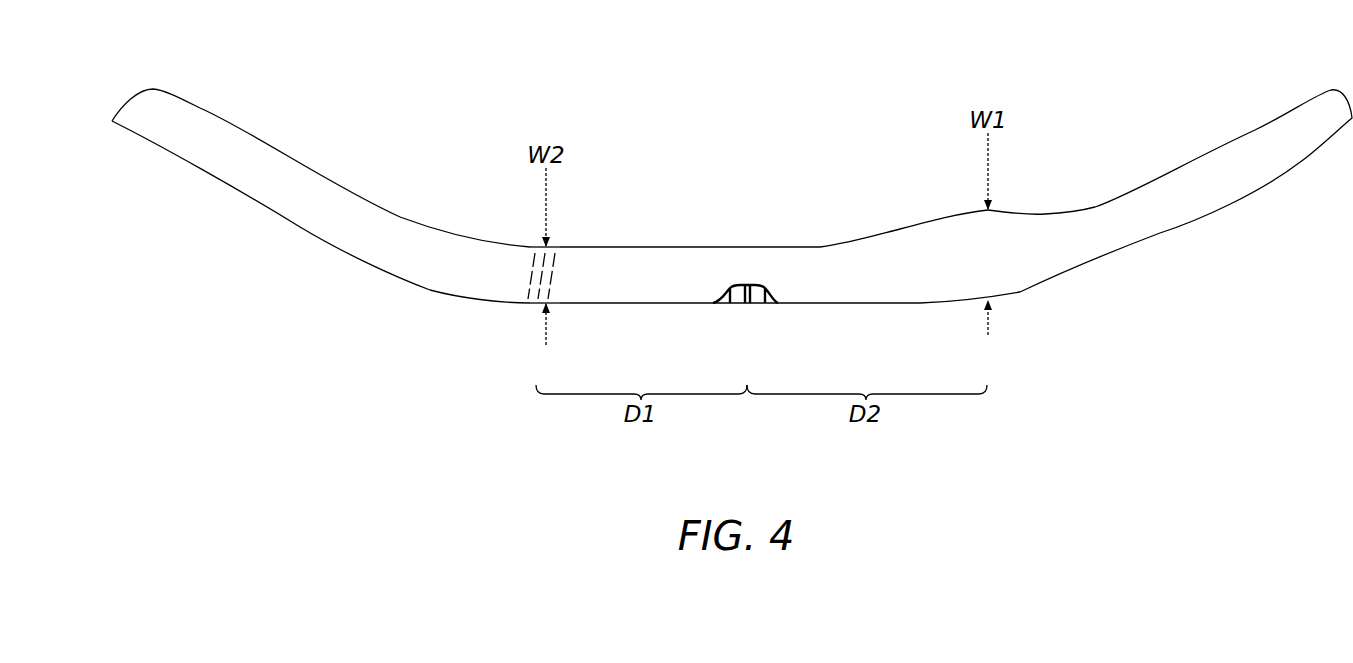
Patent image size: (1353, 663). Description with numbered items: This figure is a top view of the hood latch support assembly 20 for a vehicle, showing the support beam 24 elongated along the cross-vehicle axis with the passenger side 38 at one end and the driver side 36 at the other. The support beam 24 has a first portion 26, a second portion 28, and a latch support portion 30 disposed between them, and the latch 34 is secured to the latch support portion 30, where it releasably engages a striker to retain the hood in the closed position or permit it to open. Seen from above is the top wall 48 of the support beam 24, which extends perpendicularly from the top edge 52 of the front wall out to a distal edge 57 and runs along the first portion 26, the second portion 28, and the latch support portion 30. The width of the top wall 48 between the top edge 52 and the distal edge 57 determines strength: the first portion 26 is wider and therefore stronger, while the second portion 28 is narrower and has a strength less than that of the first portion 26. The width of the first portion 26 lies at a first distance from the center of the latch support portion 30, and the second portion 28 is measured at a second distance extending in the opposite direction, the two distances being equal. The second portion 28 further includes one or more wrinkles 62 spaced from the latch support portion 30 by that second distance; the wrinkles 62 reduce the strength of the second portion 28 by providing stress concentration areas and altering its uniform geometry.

The hood latch support assembly 20 is at (477, 55).
The support beam 24 is at (400, 268).
The first portion 26 is at (942, 268).
The second portion 28 is at (533, 247).
The latch support portion 30 is at (742, 258).
The latch 34 is at (735, 303).
The driver side 36 is at (1090, 218).
The passenger side 38 is at (388, 231).
The top wall 48 is at (655, 258).
The top edge 52 is at (1020, 292).
The distal edge 57 is at (947, 220).
The wrinkles 62 is at (538, 283).